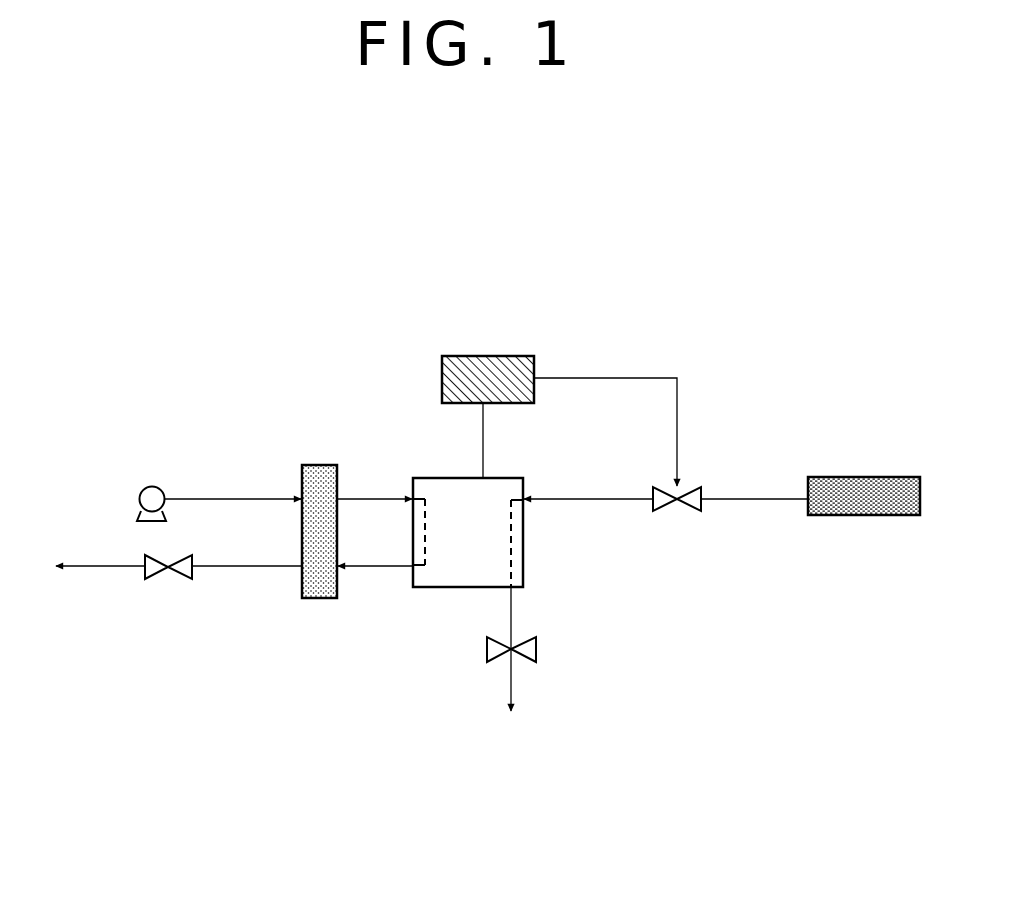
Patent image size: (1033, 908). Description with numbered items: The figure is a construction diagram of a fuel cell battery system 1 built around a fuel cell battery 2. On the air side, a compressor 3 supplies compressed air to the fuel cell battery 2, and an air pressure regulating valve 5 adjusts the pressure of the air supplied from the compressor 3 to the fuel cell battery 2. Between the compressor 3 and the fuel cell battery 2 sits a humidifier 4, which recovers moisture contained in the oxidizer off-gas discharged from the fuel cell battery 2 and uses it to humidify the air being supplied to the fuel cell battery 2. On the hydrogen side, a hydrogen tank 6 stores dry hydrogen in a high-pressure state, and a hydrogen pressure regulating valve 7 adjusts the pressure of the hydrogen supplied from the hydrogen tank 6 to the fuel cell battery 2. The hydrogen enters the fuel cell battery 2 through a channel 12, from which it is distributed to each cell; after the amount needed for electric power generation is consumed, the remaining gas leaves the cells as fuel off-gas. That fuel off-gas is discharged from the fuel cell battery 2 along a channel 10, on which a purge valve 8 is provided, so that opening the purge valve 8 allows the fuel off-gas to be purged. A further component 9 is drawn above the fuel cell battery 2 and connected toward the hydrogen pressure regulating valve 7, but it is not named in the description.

The fuel cell battery system 1 is at (496, 880).
The fuel cell battery 2 is at (462, 573).
The compressor 3 is at (150, 486).
The humidifier 4 is at (322, 592).
The air pressure regulating valve 5 is at (155, 578).
The hydrogen tank 6 is at (885, 512).
The hydrogen pressure regulating valve 7 is at (675, 505).
The purge valve 8 is at (537, 645).
The controller 9 is at (490, 355).
The channel 10 is at (513, 612).
The channel 12 is at (567, 498).